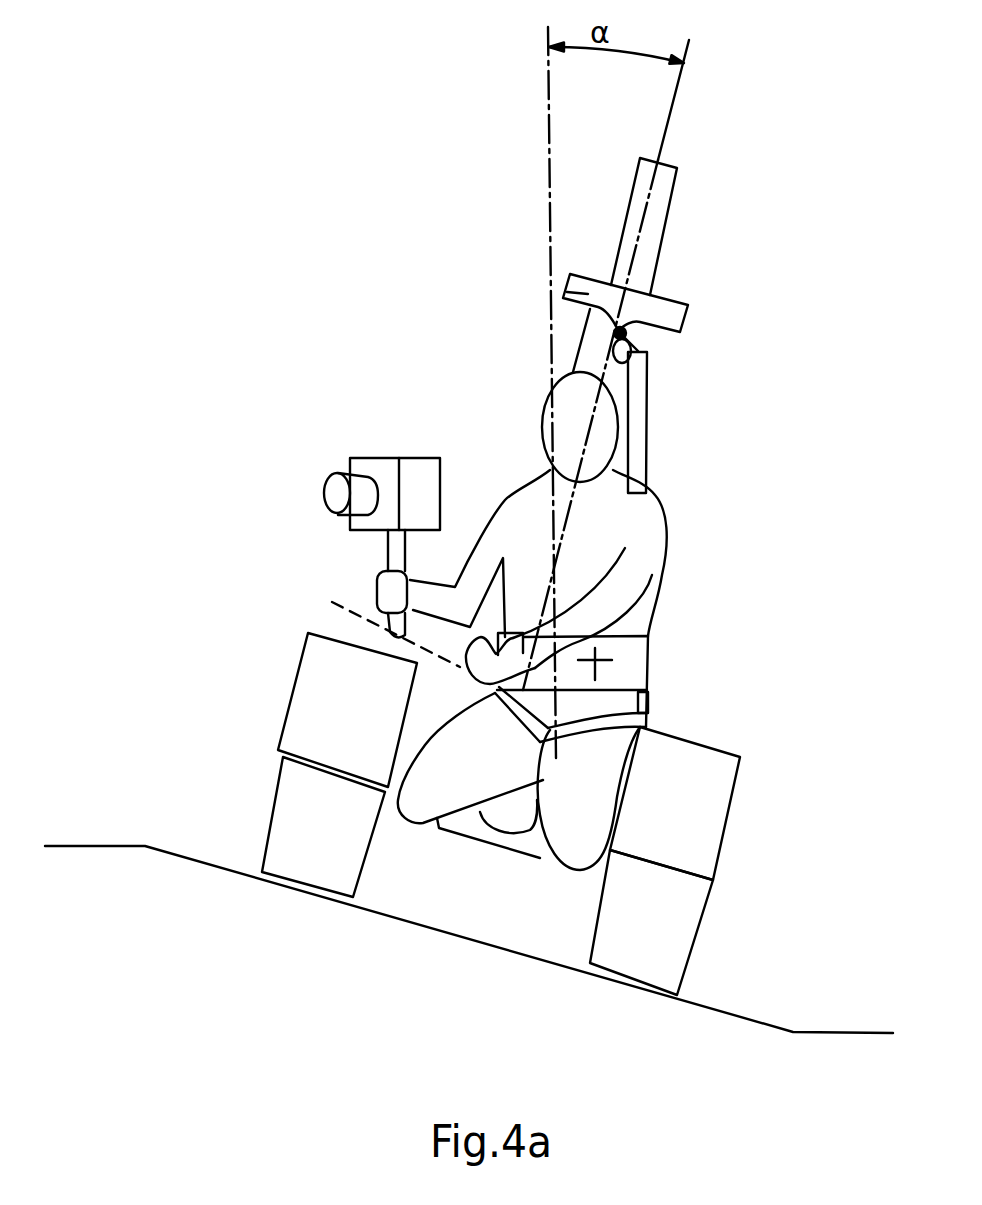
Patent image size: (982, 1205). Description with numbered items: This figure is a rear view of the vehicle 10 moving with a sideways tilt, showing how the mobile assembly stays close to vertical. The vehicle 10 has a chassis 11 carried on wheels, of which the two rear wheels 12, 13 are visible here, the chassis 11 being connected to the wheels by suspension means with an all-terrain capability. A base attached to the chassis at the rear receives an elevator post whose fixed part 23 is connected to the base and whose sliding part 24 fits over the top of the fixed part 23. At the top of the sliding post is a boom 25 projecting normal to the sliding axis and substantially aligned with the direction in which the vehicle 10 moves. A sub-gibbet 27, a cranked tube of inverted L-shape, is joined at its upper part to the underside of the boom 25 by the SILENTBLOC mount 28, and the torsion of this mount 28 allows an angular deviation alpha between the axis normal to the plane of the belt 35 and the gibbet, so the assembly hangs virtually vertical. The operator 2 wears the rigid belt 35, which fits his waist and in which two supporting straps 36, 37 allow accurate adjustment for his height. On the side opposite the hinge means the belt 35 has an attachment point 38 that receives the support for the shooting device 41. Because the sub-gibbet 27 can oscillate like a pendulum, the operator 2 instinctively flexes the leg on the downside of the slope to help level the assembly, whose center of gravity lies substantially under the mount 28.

The operator 2 is at (620, 541).
The vehicle 10 is at (354, 722).
The chassis 11 is at (520, 849).
The rear wheel 12 is at (333, 848).
The rear wheel 13 is at (661, 938).
The fixed part 23 is at (657, 200).
The sliding part 24 is at (588, 293).
The boom 25 is at (670, 310).
The sub-gibbet 27 is at (637, 423).
The SILENTBLOC mount 28 is at (632, 340).
The rigid belt 35 is at (633, 677).
The supporting strap 36 is at (593, 731).
The supporting strap 37 is at (525, 718).
The attachment point 38 is at (608, 652).
The shooting device 41 is at (430, 512).